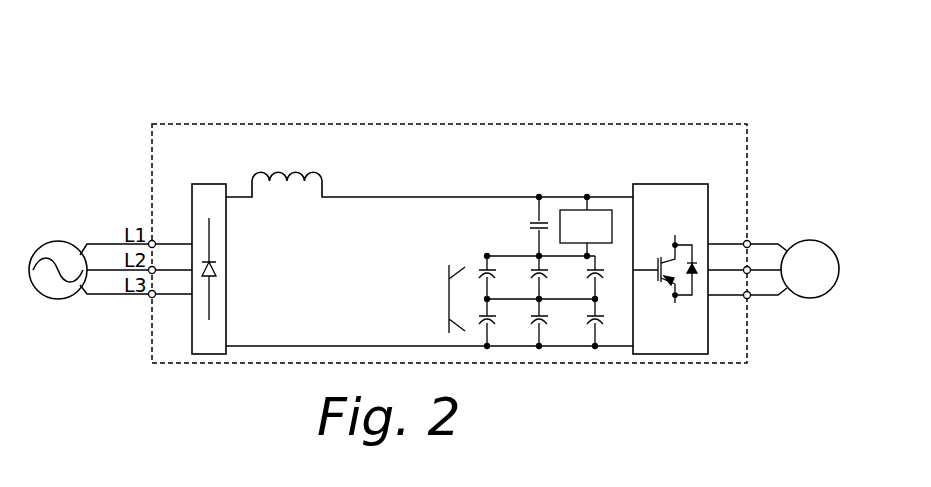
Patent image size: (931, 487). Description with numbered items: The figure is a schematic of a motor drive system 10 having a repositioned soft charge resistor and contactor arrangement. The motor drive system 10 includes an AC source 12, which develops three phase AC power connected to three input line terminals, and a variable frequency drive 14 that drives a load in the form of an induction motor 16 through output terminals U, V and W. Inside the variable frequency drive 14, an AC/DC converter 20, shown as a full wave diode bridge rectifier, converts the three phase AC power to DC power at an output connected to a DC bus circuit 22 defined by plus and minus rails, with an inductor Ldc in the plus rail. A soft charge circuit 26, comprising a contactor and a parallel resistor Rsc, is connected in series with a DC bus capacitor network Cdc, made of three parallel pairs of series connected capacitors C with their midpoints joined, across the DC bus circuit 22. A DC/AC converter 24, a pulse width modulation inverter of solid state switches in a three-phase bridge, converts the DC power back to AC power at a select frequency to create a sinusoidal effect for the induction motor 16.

The motor drive system 10 is at (596, 108).
The AC source 12 is at (62, 241).
The variable frequency drive 14 is at (747, 149).
The induction motor 16 is at (817, 240).
The AC/DC converter 20 is at (213, 184).
The DC bus circuit 22 is at (523, 172).
The DC/AC converter 24 is at (684, 184).
The soft charge circuit 26 is at (458, 222).